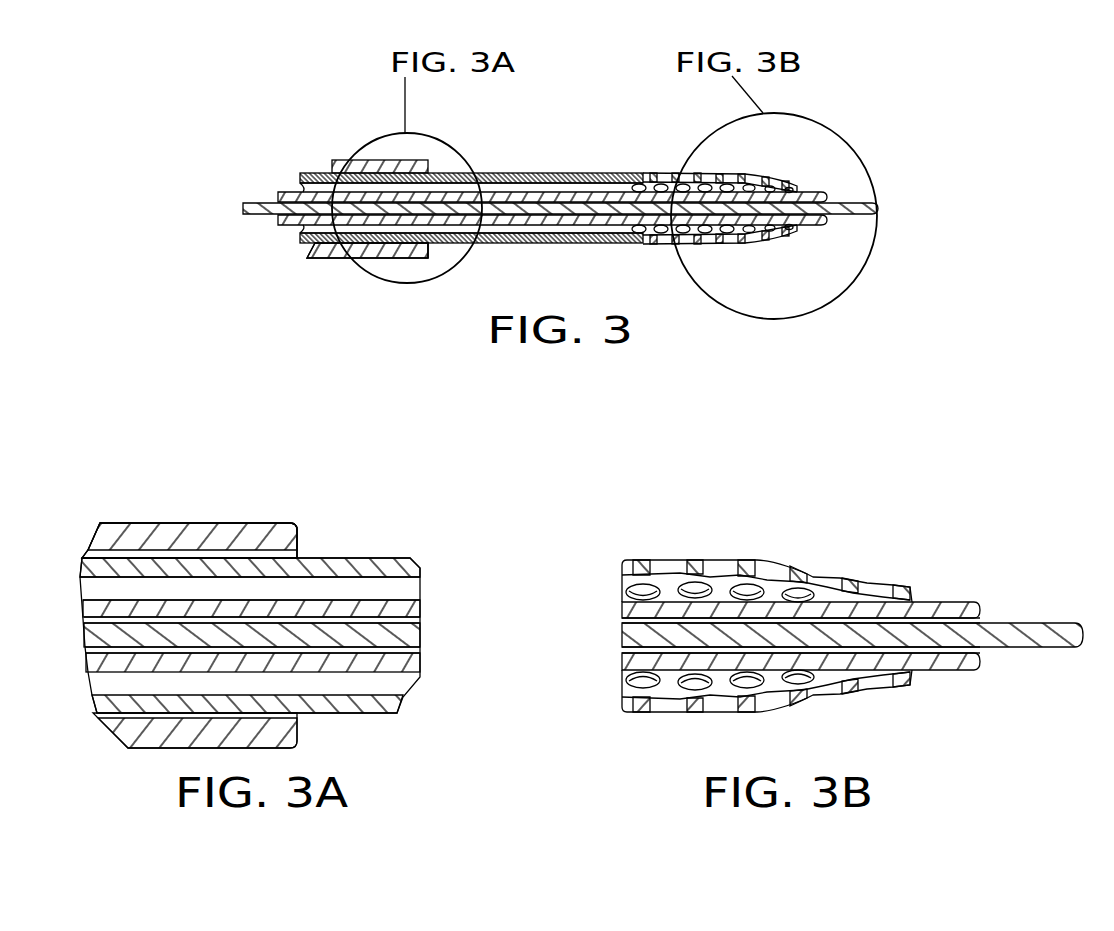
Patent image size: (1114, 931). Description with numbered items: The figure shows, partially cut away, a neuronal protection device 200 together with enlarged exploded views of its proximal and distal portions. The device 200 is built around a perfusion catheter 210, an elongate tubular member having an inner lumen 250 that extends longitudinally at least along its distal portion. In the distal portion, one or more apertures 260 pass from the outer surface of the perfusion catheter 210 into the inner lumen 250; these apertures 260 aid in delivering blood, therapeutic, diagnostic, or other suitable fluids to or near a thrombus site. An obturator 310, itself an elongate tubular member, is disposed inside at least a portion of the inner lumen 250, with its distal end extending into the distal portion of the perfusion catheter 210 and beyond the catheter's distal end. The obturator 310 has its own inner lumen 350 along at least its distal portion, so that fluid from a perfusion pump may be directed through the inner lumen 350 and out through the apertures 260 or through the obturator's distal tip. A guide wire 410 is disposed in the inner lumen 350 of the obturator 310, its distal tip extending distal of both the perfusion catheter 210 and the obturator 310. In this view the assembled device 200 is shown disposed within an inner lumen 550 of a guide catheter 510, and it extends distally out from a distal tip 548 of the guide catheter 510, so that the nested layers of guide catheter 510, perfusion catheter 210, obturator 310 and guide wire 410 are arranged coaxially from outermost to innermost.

In FIG. 3, the neuronal protection device 200 is at (530, 228).
In FIG. 3A, the perfusion catheter 210 is at (382, 707).
In FIG. 3, the inner lumen 250 is at (510, 187).
In FIG. 3A, the inner lumen 250 is at (330, 588).
In FIG. 3B, the apertures 260 is at (653, 583).
In FIG. 3, the obturator 310 is at (620, 224).
In FIG. 3A, the obturator 310 is at (417, 608).
In FIG. 3B, the obturator 310 is at (542, 543).
In FIG. 3A, the inner lumen 350 is at (413, 620).
In FIG. 3B, the inner lumen 350 is at (622, 620).
In FIG. 3, the guide wire 410 is at (847, 213).
In FIG. 3A, the guide wire 410 is at (417, 636).
In FIG. 3B, the guide wire 410 is at (547, 675).
In FIG. 3, the guide catheter 510 is at (333, 258).
In FIG. 3A, the guide catheter 510 is at (197, 522).
In FIG. 3, the distal tip 548 is at (427, 258).
In FIG. 3A, the distal tip 548 is at (293, 525).
In FIG. 3, the inner lumen 550 is at (348, 171).
In FIG. 3A, the inner lumen 550 is at (152, 553).